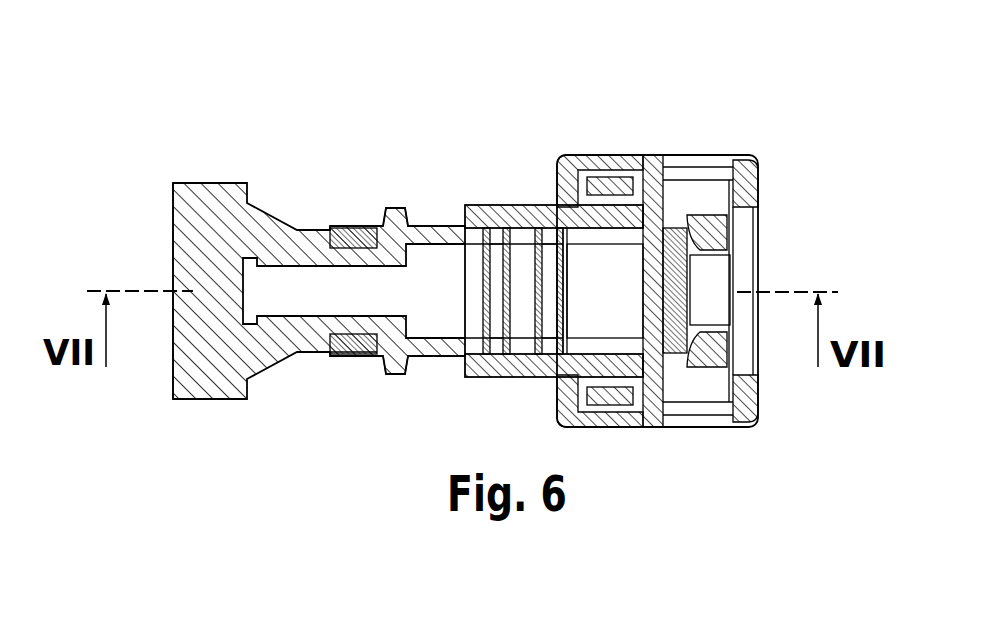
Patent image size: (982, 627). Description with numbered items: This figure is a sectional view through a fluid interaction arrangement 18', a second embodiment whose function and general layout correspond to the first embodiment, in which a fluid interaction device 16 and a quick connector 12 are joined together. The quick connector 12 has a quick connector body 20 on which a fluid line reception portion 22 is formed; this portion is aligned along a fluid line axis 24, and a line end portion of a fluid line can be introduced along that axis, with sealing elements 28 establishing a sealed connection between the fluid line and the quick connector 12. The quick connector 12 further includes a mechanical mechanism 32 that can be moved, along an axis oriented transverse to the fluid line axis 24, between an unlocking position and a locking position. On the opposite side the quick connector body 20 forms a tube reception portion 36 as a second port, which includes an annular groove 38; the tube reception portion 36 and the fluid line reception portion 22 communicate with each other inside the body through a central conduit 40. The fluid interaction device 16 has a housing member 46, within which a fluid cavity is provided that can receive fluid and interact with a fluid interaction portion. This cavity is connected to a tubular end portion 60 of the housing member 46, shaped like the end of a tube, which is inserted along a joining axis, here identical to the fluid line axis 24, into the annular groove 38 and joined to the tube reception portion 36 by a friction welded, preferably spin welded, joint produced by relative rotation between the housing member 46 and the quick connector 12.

The quick connector 12 is at (690, 125).
The fluid interaction device 16 is at (284, 120).
The fluid interaction arrangement 18' is at (780, 222).
The quick connector body 20 is at (511, 205).
The fluid line reception portion 22 is at (624, 305).
The fluid line axis 24 is at (788, 290).
The sealing elements 28 is at (496, 350).
The mechanical mechanism 32 is at (613, 175).
The tube reception portion 36 is at (393, 195).
The annular groove 38 is at (350, 207).
The central conduit 40 is at (445, 255).
The housing member 46 is at (172, 222).
The tubular end portion 60 is at (355, 346).